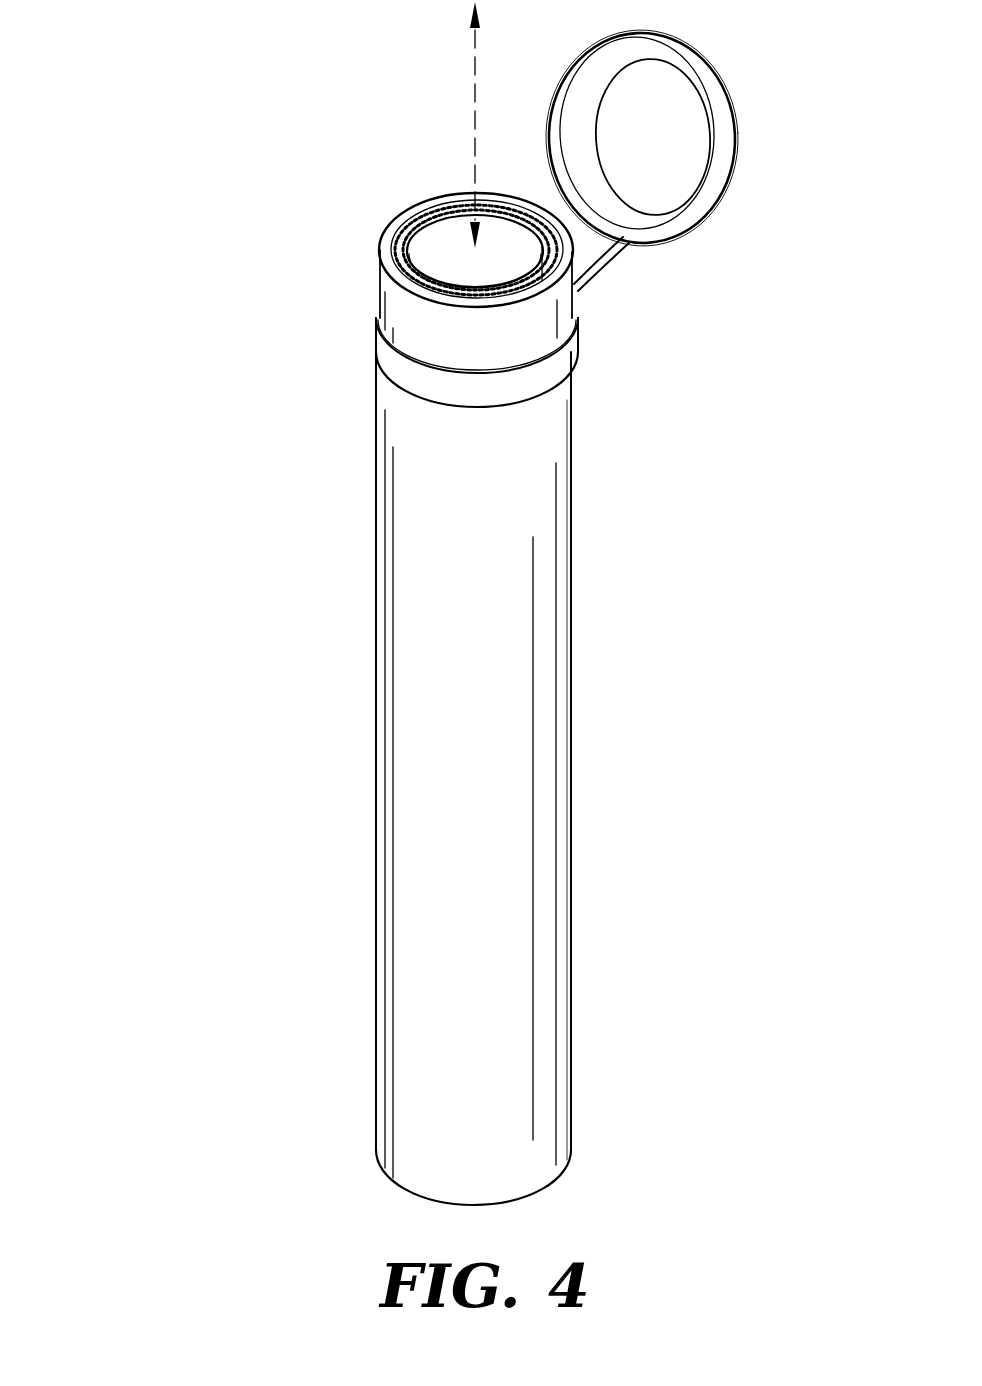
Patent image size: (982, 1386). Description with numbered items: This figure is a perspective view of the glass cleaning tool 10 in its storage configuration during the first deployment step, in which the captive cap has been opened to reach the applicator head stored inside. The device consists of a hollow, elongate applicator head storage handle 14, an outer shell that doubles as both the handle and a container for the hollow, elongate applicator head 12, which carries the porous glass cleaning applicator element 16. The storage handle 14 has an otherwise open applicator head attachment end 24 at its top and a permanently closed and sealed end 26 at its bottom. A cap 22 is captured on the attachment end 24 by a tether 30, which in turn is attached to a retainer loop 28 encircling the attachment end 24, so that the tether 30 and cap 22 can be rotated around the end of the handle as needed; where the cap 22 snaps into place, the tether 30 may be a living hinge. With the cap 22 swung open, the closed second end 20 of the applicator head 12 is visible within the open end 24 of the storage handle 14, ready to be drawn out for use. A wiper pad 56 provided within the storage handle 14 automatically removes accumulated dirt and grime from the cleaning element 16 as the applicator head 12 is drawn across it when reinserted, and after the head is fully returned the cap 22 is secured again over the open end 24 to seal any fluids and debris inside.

The glass cleaning tool 10 is at (126, 694).
The applicator head 12 is at (460, 220).
The applicator head storage handle 14 is at (480, 734).
The glass cleaning applicator element 16 is at (408, 207).
The second end 20 is at (457, 267).
The cap 22 is at (735, 112).
The applicator head attachment end 24 is at (542, 302).
The sealed end 26 is at (380, 1178).
The retainer loop 28 is at (372, 343).
The tether 30 is at (590, 258).
The wiper pad 56 is at (390, 238).